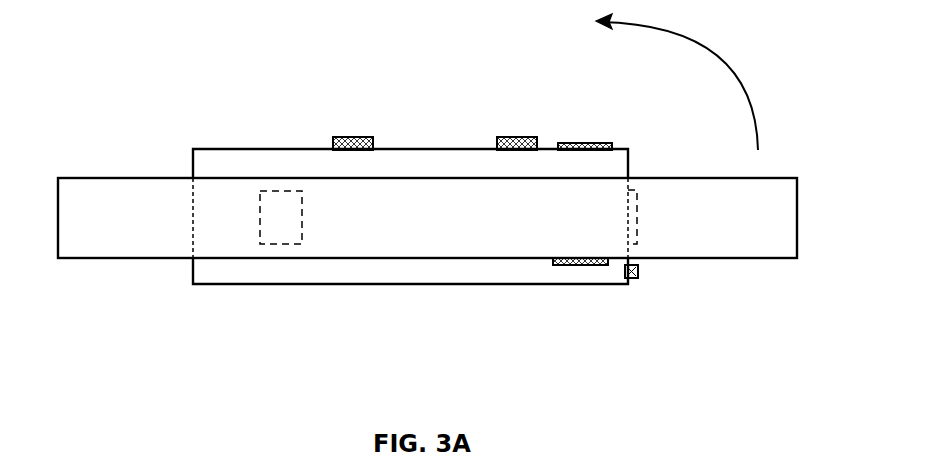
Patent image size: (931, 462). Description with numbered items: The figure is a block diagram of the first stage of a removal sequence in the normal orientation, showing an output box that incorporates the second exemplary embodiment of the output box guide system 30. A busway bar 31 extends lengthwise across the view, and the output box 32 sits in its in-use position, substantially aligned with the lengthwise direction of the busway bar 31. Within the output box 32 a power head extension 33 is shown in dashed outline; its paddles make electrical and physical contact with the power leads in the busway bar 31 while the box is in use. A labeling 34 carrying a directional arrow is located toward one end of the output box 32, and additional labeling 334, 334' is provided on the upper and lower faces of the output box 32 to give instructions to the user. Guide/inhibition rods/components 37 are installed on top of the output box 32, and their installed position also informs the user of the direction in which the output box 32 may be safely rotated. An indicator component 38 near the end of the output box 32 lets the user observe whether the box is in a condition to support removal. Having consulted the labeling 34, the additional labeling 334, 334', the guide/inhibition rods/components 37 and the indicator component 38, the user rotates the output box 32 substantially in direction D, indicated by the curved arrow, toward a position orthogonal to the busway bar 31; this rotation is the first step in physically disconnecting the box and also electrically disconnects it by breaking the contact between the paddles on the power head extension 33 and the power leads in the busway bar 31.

The output box guide system 30 is at (86, 55).
The busway bar 31 is at (740, 234).
The output box 32 is at (191, 269).
The power head extension 33 is at (281, 219).
The labeling 34 is at (632, 218).
The guide/inhibition rods/components 37 is at (353, 137).
The additional labeling 334 is at (597, 109).
The additional labeling 334' is at (565, 301).
The indicator component 38 is at (632, 278).
The direction D is at (677, 82).